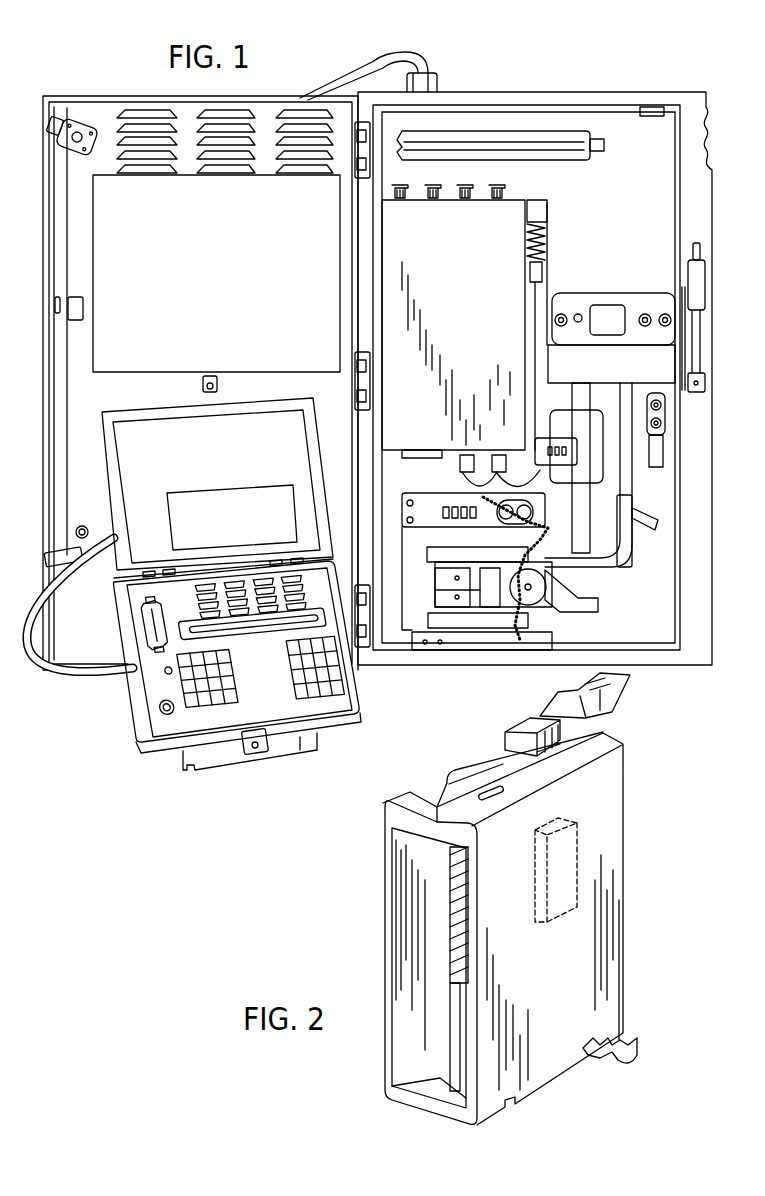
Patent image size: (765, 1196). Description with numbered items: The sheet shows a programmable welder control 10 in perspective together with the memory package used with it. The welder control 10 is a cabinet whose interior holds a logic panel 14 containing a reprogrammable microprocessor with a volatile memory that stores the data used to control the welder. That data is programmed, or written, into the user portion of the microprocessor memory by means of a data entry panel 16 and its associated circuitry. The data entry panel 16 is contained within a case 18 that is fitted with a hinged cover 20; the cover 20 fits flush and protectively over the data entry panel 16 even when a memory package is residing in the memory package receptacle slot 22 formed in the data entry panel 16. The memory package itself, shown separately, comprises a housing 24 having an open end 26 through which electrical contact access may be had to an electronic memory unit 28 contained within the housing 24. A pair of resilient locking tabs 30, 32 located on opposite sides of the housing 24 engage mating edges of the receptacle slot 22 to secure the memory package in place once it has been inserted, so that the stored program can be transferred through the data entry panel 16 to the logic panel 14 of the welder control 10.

In FIG. 1, the programmable welder control 10 is at (474, 82).
In FIG. 1, the logic panel 14 is at (510, 207).
In FIG. 1, the data entry panel 16 is at (157, 728).
In FIG. 1, the case 18 is at (118, 628).
In FIG. 1, the hinged cover 20 is at (105, 445).
In FIG. 1, the memory package receptacle slot 22 is at (157, 630).
In FIG. 2, the housing 24 is at (612, 945).
In FIG. 2, the open end 26 is at (398, 848).
In FIG. 2, the electronic memory unit 28 is at (560, 870).
In FIG. 2, the resilient locking tab 30 is at (613, 699).
In FIG. 2, the resilient locking tab 32 is at (610, 1048).